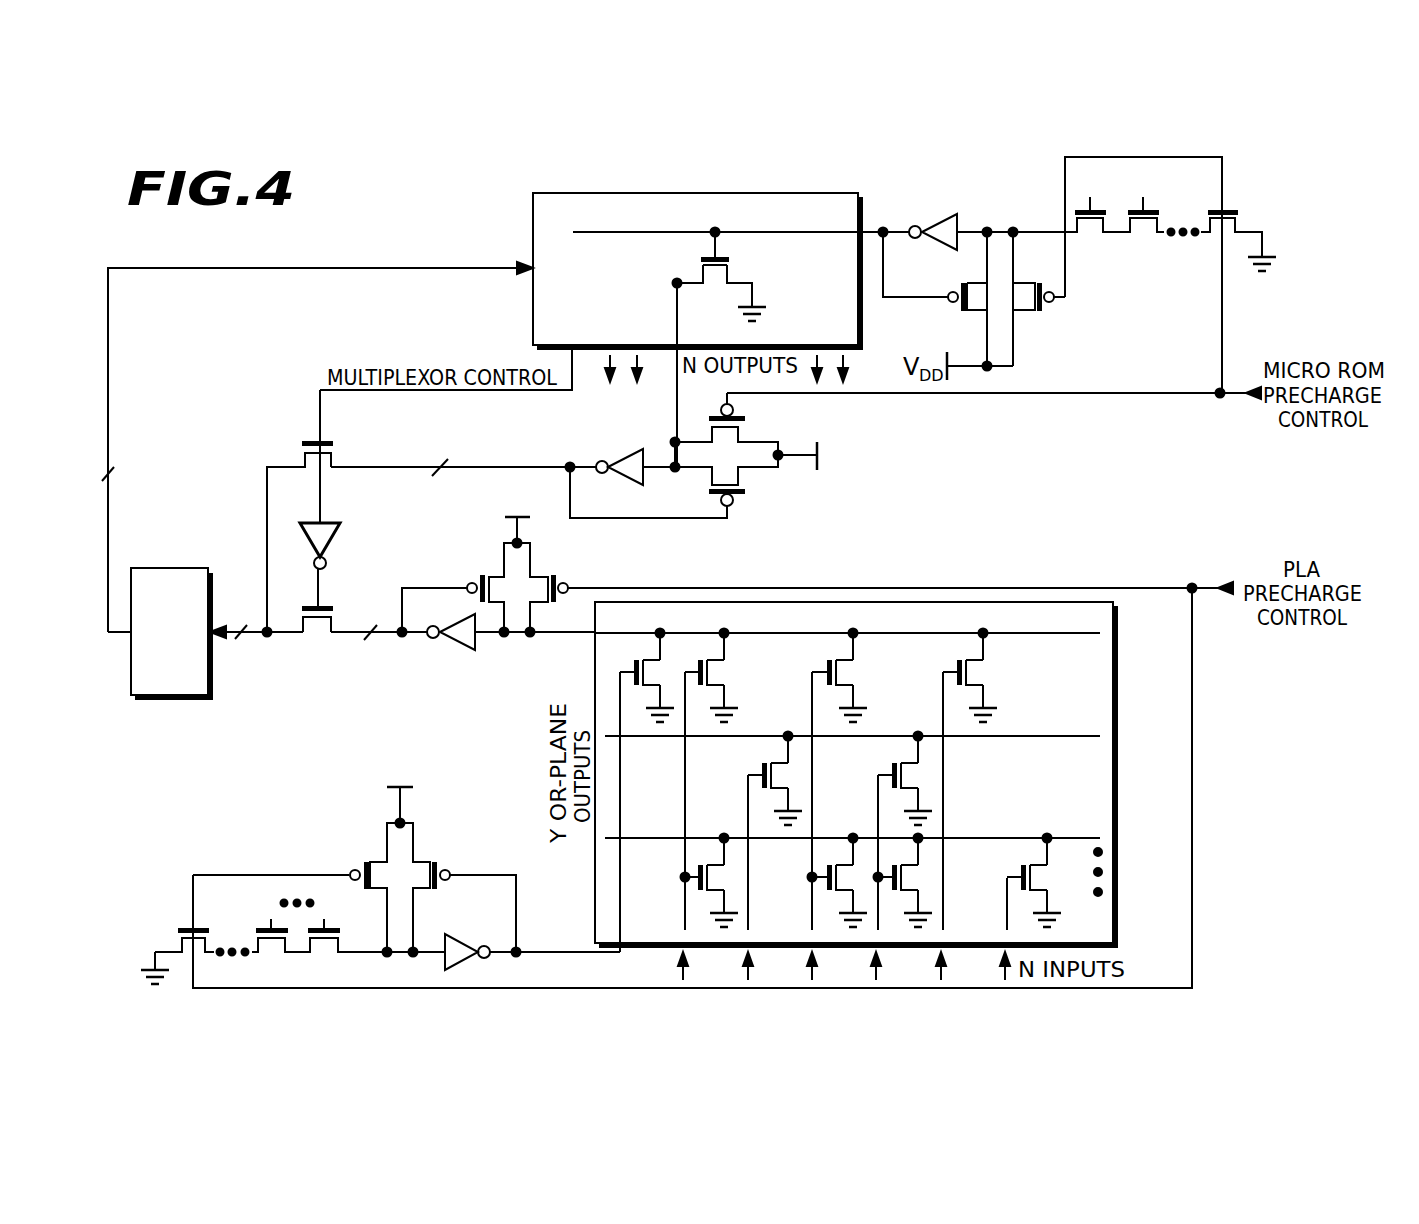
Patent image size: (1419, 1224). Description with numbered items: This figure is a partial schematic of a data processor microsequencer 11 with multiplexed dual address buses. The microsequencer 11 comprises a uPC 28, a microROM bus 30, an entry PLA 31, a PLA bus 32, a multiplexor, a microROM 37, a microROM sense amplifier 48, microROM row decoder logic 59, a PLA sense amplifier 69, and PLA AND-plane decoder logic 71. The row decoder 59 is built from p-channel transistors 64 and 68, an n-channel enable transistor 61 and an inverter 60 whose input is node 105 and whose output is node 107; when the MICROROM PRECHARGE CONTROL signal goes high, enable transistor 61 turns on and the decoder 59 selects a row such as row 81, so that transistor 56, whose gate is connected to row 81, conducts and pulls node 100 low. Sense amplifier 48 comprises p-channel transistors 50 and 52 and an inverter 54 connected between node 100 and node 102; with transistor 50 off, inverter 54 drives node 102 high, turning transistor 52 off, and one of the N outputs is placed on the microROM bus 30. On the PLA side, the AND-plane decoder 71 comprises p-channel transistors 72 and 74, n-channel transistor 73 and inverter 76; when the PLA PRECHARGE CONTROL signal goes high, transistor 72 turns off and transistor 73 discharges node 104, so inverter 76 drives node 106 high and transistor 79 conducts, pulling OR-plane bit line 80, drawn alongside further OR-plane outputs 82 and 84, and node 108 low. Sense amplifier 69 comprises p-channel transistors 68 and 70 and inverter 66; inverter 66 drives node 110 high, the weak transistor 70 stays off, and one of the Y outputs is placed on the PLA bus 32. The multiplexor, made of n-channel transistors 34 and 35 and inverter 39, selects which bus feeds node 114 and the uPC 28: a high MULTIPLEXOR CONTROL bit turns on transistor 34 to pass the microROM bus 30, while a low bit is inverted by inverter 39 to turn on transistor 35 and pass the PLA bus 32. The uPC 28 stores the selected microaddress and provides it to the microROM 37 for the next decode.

The data processor microsequencer 11 is at (382, 240).
The uPC 28 is at (182, 568).
The microROM bus 30 is at (441, 466).
The entry PLA 31 is at (1118, 713).
The PLA bus 32 is at (370, 628).
The n-channel transistor 34 is at (305, 455).
The n-channel transistor 35 is at (318, 604).
The microROM 37 is at (533, 220).
The inverter 39 is at (322, 521).
The microROM sense amplifier 48 is at (703, 475).
The p-channel transistor 50 is at (741, 432).
The p-channel transistor 52 is at (741, 482).
The inverter 54 is at (644, 473).
The transistor 56 is at (728, 269).
The microROM row decoder logic 59 is at (1152, 288).
The inverter 60 is at (931, 220).
The n-channel enable transistor 61 is at (1238, 226).
The p-channel transistor 64 is at (978, 313).
The inverter 66 is at (466, 655).
The p-channel transistor 68 is at (1015, 313).
The PLA sense amplifier 69 is at (498, 589).
The p-channel transistor 70 is at (500, 575).
The PLA AND-plane decoder logic 71 is at (379, 865).
The p-channel transistor 72 is at (375, 860).
The n-channel transistor 73 is at (182, 946).
The p-channel transistor 74 is at (418, 860).
The inverter 76 is at (466, 934).
The transistor 79 is at (660, 669).
The OR-plane bit line 80 is at (1068, 637).
The row 81 is at (625, 234).
The OR-plane output line 82 is at (1068, 740).
The OR-plane output line 84 is at (1075, 836).
The node 100 is at (675, 442).
The node 102 is at (570, 462).
The node 104 is at (385, 958).
The node 105 is at (1013, 228).
The node 106 is at (518, 960).
The node 107 is at (883, 228).
The node 108 is at (530, 645).
The node 110 is at (402, 645).
The node 114 is at (267, 645).